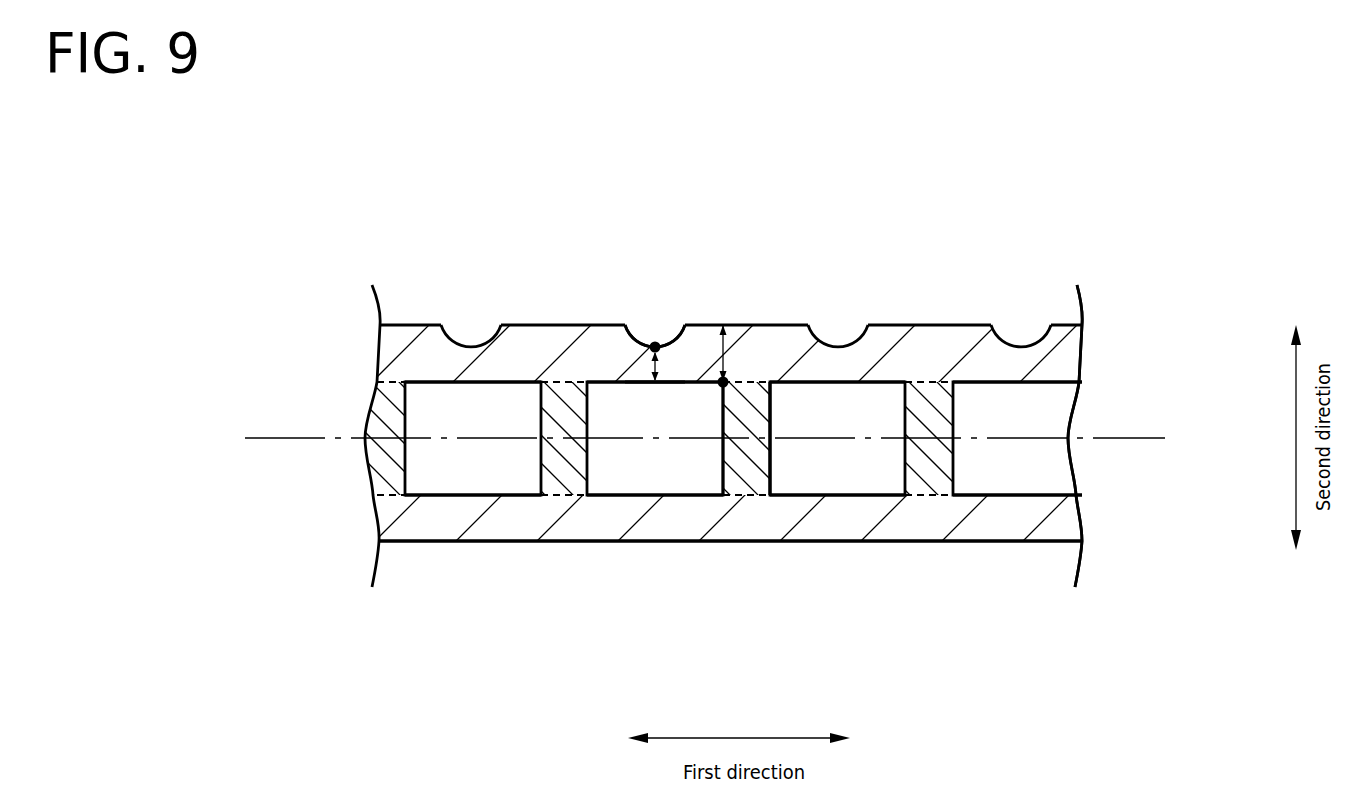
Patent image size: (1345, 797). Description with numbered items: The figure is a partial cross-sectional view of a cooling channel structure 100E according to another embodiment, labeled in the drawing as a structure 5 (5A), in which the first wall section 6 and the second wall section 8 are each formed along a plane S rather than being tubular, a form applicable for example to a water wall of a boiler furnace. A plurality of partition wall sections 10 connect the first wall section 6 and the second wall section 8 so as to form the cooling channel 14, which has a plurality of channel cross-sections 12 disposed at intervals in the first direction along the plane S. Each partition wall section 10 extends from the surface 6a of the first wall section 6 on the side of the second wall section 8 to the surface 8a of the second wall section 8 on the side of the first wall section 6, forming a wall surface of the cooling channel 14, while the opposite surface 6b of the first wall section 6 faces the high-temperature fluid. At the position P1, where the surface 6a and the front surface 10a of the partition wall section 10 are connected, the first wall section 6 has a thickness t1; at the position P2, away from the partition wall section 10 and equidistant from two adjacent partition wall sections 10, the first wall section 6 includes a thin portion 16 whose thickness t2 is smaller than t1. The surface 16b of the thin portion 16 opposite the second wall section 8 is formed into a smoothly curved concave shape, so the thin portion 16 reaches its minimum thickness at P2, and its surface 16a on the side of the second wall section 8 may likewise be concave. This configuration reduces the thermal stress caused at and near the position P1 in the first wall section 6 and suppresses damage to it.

The heat exchange body 5 is at (944, 152).
The heat exchange body variant 5A is at (1075, 436).
The cooling channel structure 100E is at (1054, 170).
The first wall section 6 is at (433, 342).
The surface of the first wall section on the side of the second wall section 6a is at (678, 383).
The surface of the first wall section on the side opposite to the second wall sectio 6b is at (522, 325).
The second wall section 8 is at (655, 527).
The surface of the second wall section on the side of the first wall section 8a is at (657, 495).
The partition wall section 10 is at (396, 457).
The front surface of the partition wall section 10a is at (746, 455).
The channel cross-section 12 is at (472, 457).
The cooling channel 14 is at (797, 400).
The thin portion 16 is at (457, 342).
The surface of the thin portion on the side of the second wall section 16a is at (630, 383).
The surface of the thin portion on the side opposite to the second wall section 16b is at (654, 344).
The position P1 is at (725, 381).
The position P2 is at (655, 344).
The thickness t1 is at (724, 352).
The thickness t2 is at (658, 363).
The plane S is at (718, 440).